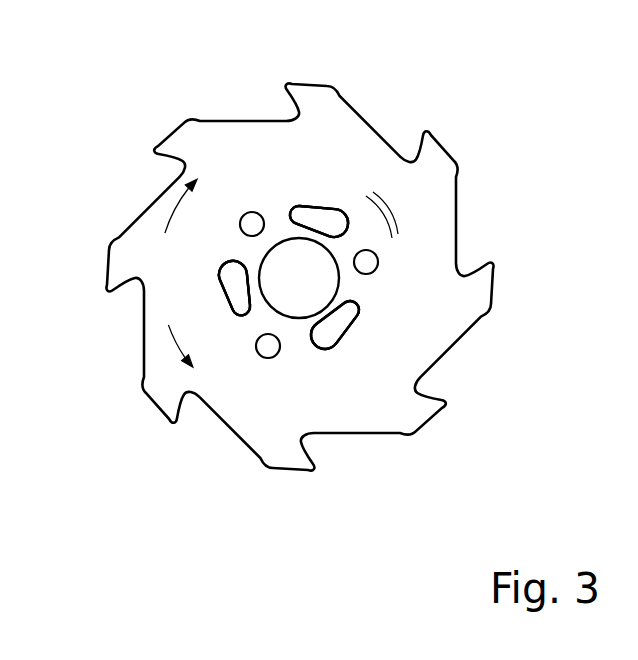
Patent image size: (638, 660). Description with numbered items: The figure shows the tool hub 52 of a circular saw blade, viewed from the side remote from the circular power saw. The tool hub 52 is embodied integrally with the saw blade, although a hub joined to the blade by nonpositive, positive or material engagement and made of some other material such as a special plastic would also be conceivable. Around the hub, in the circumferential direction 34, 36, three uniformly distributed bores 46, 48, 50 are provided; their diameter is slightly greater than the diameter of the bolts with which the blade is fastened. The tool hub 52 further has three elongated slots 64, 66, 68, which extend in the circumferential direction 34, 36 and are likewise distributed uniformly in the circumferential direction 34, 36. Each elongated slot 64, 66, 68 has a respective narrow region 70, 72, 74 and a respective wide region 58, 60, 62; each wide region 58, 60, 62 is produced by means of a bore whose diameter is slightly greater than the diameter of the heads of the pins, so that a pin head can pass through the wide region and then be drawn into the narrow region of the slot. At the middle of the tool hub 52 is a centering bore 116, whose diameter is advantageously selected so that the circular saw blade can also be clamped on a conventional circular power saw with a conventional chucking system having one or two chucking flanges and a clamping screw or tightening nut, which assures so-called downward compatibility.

The circumferential direction 34 is at (180, 354).
The circumferential direction 36 is at (180, 210).
The bore 46 is at (265, 348).
The bore 48 is at (365, 262).
The bore 50 is at (246, 222).
The tool hub 52 is at (399, 191).
The wide region 58 is at (330, 342).
The wide region 60 is at (332, 224).
The wide region 62 is at (232, 277).
The elongated slot 64 is at (357, 340).
The elongated slot 66 is at (319, 197).
The elongated slot 68 is at (215, 299).
The narrow region 70 is at (350, 313).
The narrow region 72 is at (297, 208).
The narrow region 74 is at (240, 308).
The centering bore 116 is at (297, 318).